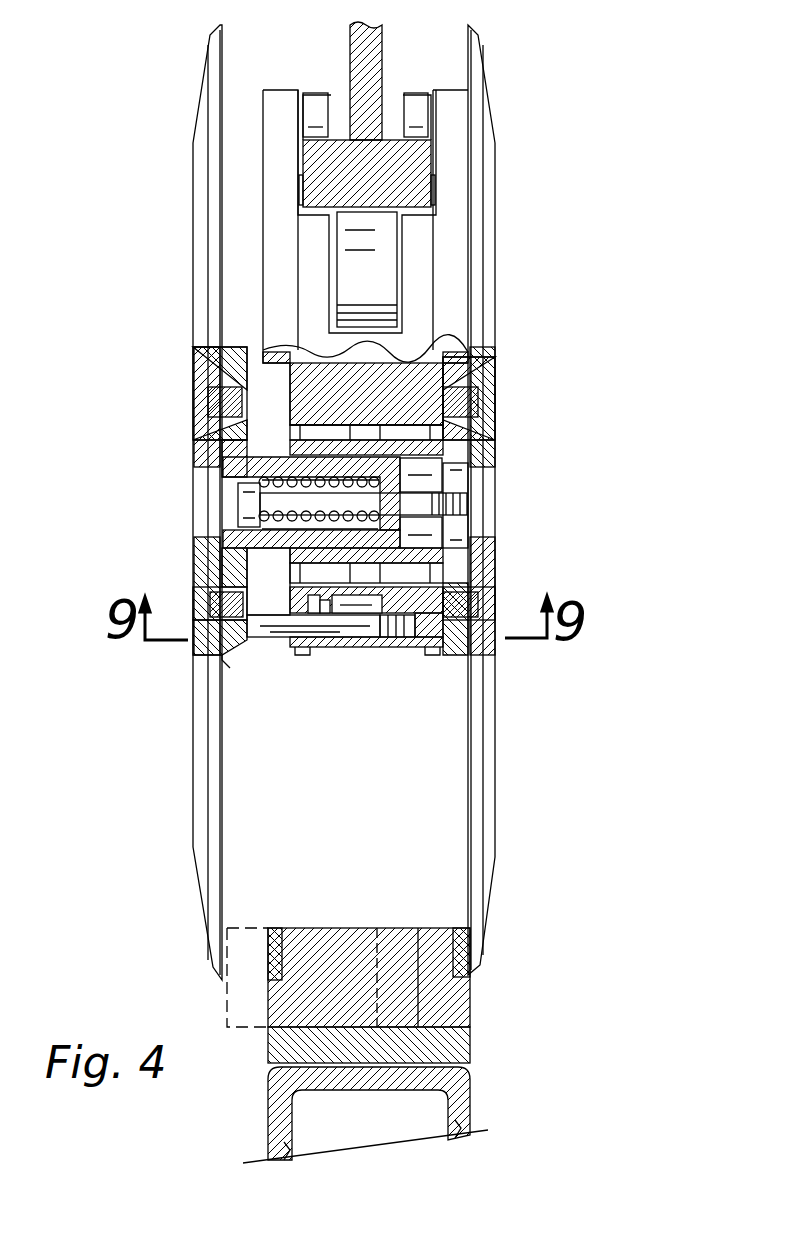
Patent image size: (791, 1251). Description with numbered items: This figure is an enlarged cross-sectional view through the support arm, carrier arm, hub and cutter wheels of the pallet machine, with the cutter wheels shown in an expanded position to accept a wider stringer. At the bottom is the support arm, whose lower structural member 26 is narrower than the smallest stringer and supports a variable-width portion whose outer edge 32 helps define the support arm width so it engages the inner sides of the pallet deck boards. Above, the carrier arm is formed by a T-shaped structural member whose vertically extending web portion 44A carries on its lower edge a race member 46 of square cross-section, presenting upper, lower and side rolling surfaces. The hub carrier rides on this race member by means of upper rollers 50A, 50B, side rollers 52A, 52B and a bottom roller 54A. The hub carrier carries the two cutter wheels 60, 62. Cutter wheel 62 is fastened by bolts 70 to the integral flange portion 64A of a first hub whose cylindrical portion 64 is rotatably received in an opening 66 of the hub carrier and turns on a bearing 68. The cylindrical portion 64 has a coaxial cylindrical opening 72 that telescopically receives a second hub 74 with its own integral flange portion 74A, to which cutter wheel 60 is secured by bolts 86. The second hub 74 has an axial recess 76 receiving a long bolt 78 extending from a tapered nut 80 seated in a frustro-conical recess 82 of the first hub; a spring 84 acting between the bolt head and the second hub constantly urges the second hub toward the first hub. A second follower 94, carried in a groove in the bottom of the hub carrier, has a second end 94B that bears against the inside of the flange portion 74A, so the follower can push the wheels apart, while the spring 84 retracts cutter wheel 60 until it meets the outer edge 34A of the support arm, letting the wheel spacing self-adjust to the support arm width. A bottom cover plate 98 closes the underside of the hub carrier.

The lower structural member 26 is at (278, 1088).
The outer edge 32 is at (470, 930).
The outer edge of the support arm 34A is at (262, 950).
The web portion 44A is at (372, 40).
The race member 46 is at (420, 170).
The upper roller 50A is at (315, 102).
The upper roller 50B is at (417, 102).
The side roller 52A is at (300, 190).
The side roller 52B is at (435, 190).
The bottom roller 54A is at (345, 258).
The cutter wheel 60 is at (205, 742).
The cutter wheel 62 is at (488, 748).
The cylindrical portion 64 is at (430, 448).
The integral flange portion 64A is at (463, 428).
The opening 66 is at (420, 578).
The bearing 68 is at (392, 578).
The bolts 70 is at (490, 592).
The coaxial cylindrical opening 72 is at (292, 462).
The second hub 74 is at (260, 540).
The integral flange portion 74A is at (232, 562).
The axial recess 76 is at (248, 488).
The long bolt 78 is at (300, 500).
The tapered nut 80 is at (465, 521).
The frustro-conical recess 82 is at (470, 548).
The spring 84 is at (235, 465).
The bolts 86 is at (200, 385).
The second follower 94 is at (275, 625).
The second end of second follower 94B is at (210, 645).
The bottom cover plate 98 is at (365, 625).